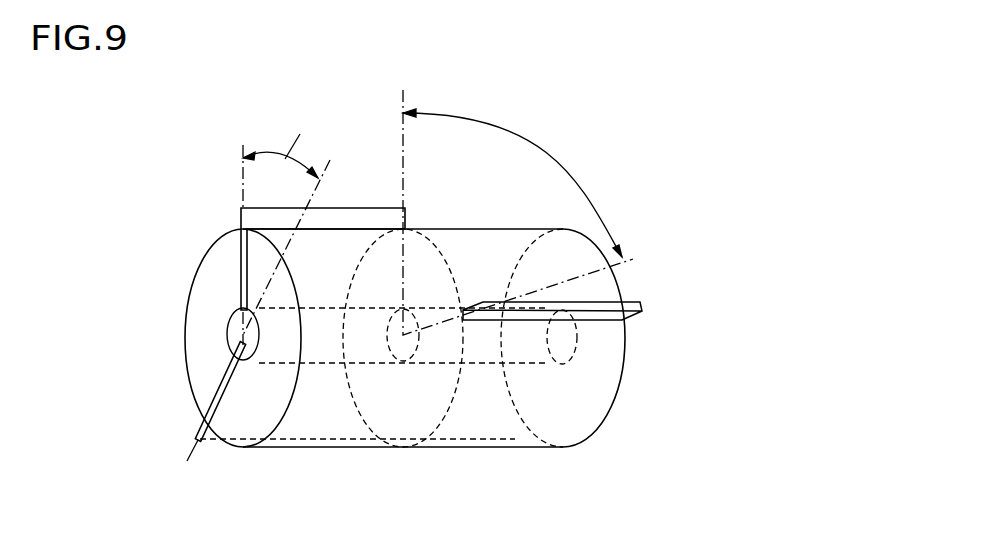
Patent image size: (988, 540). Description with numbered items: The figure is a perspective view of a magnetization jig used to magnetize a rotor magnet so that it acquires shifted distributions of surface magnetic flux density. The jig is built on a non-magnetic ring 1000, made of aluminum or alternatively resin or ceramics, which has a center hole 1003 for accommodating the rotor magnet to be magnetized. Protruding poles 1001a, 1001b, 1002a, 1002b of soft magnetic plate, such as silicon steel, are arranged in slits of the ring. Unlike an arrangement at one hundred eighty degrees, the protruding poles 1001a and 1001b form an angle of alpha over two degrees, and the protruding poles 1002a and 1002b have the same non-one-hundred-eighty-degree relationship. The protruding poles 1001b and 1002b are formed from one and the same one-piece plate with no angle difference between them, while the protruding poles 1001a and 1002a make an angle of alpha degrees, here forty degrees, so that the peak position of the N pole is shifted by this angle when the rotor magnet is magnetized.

The non-magnetic ring 1000 is at (466, 245).
The protruding pole 1001a is at (240, 213).
The protruding pole 1001b is at (205, 443).
The protruding pole 1002a is at (643, 306).
The protruding pole 1002b is at (213, 473).
The center hole 1003 is at (207, 363).